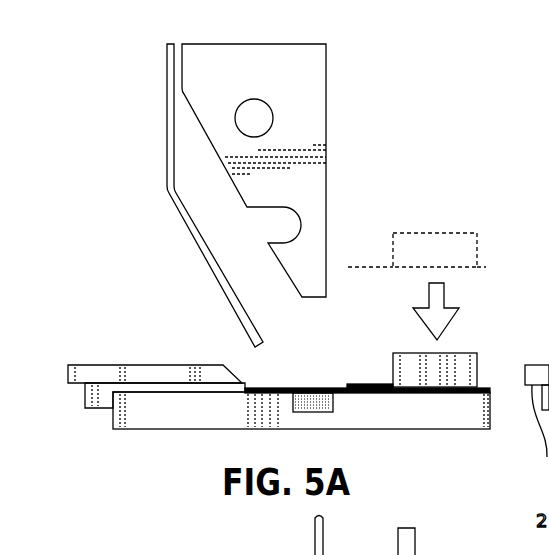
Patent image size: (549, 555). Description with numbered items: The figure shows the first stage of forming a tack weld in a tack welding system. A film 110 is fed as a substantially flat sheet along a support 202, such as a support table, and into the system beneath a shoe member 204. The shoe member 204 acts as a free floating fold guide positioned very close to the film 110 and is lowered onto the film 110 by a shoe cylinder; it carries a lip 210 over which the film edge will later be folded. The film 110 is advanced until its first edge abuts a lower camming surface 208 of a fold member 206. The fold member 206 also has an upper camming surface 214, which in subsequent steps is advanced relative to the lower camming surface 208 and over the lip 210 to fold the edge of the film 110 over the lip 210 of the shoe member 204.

The film 110 is at (317, 388).
The support 202 is at (155, 429).
The shoe member 204 is at (478, 367).
The fold member 206 is at (159, 343).
The lower camming surface 208 is at (103, 408).
The lip 210 is at (362, 385).
The upper camming surface 214 is at (73, 383).